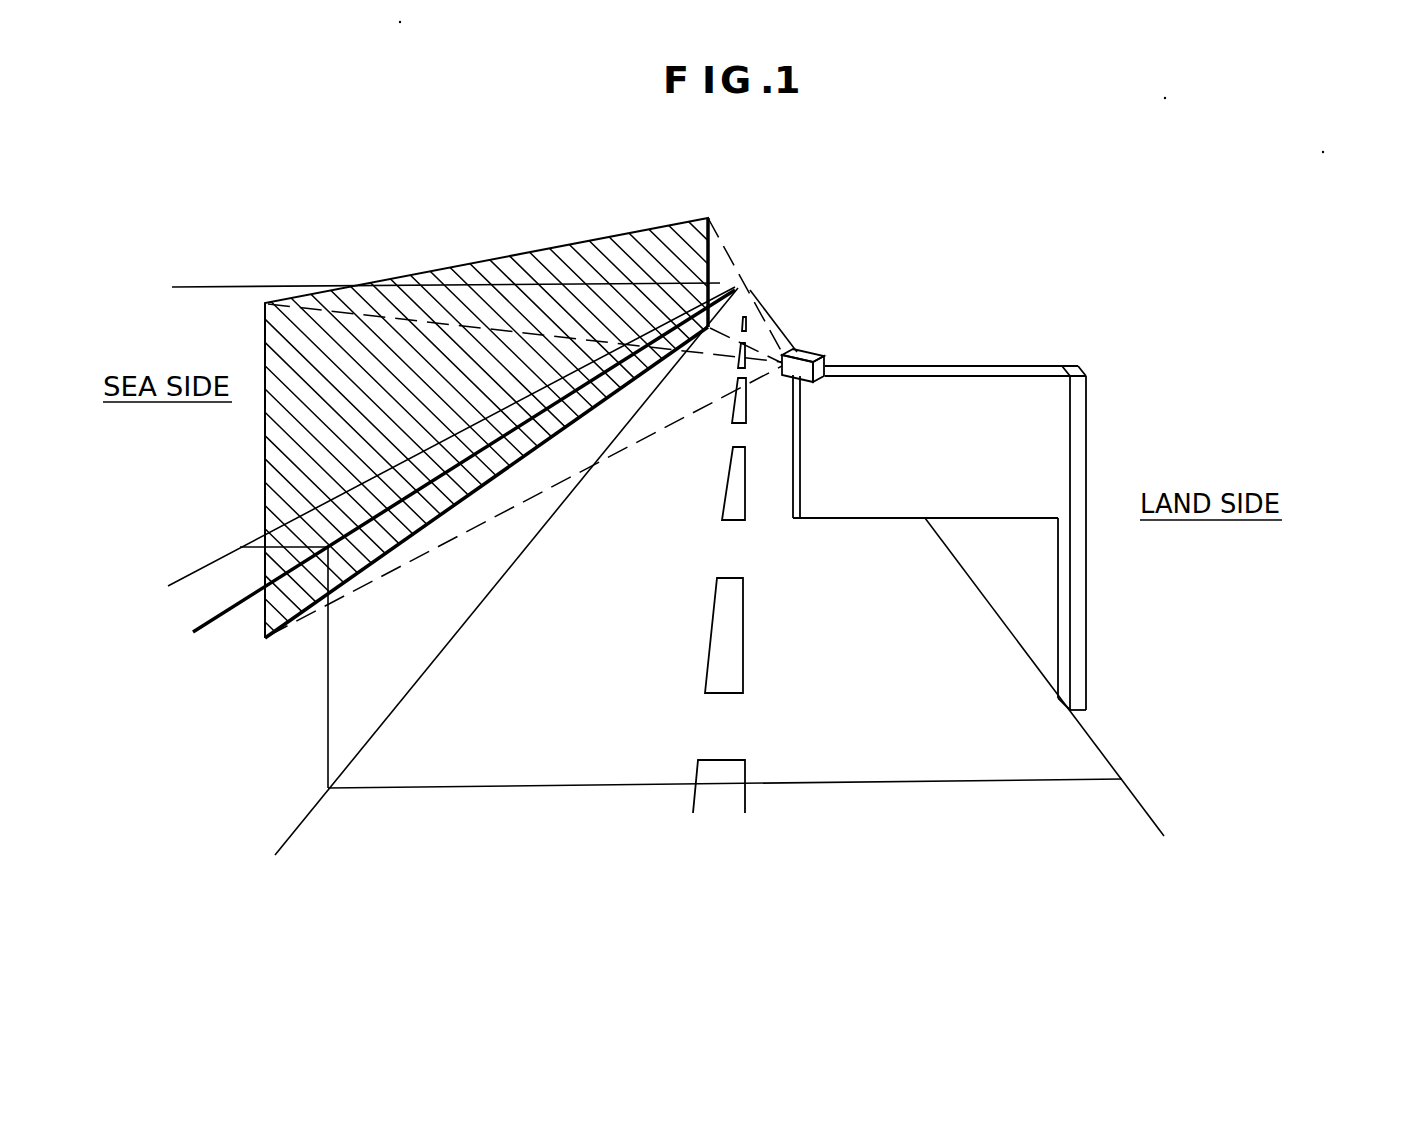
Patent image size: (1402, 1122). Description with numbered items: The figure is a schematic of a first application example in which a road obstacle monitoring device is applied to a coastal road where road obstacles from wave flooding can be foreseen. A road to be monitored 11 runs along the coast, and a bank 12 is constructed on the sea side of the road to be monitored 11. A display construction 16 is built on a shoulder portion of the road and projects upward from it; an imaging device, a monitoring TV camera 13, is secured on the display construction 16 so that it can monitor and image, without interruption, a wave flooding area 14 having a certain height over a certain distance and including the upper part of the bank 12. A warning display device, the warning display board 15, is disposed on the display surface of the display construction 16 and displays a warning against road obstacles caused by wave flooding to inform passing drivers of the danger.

The road to be monitored 11 is at (818, 772).
The bank 12 is at (402, 665).
The monitoring TV camera 13 is at (806, 352).
The wave flooding area 14 is at (408, 337).
The warning display board 15 is at (962, 387).
The display construction 16 is at (1080, 617).